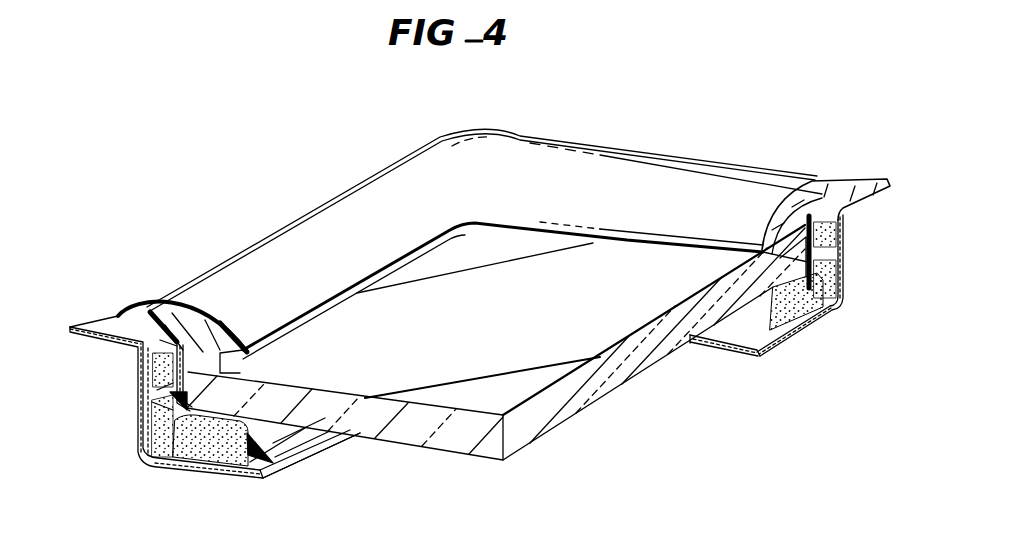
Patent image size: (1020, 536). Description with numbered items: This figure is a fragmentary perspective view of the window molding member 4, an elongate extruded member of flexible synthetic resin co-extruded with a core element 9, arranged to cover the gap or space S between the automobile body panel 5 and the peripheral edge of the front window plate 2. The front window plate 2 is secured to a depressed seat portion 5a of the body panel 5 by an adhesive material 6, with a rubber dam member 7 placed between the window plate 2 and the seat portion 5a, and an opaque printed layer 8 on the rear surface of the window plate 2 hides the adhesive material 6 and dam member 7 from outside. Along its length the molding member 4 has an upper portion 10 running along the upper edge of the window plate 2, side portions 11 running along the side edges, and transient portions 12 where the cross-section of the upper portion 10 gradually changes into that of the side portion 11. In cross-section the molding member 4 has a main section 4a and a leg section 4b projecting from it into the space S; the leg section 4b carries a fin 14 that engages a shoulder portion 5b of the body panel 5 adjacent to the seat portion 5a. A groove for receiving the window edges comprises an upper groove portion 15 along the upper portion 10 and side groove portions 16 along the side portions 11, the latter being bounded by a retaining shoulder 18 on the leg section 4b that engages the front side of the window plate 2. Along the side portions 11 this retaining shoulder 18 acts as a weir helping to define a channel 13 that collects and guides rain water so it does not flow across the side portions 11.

The front window plate 2 is at (553, 367).
The window molding member 4 is at (480, 299).
The main section 4a is at (196, 335).
The leg section 4b is at (164, 470).
The automobile body panel 5 is at (215, 389).
The seat portion 5a is at (240, 472).
The shoulder portion 5b is at (146, 428).
The adhesive material 6 is at (205, 462).
The rubber dam member 7 is at (272, 456).
The opaque printed layer 8 is at (300, 450).
The core element 9 is at (170, 330).
The upper portion 10 is at (734, 166).
The side portion 11 is at (290, 232).
The transient portion 12 is at (495, 148).
The channel 13 is at (240, 372).
The fin 14 is at (150, 398).
The upper groove portion 15 is at (832, 238).
The side groove portion 16 is at (150, 446).
The retaining shoulder 18 is at (218, 332).
The space S is at (143, 345).